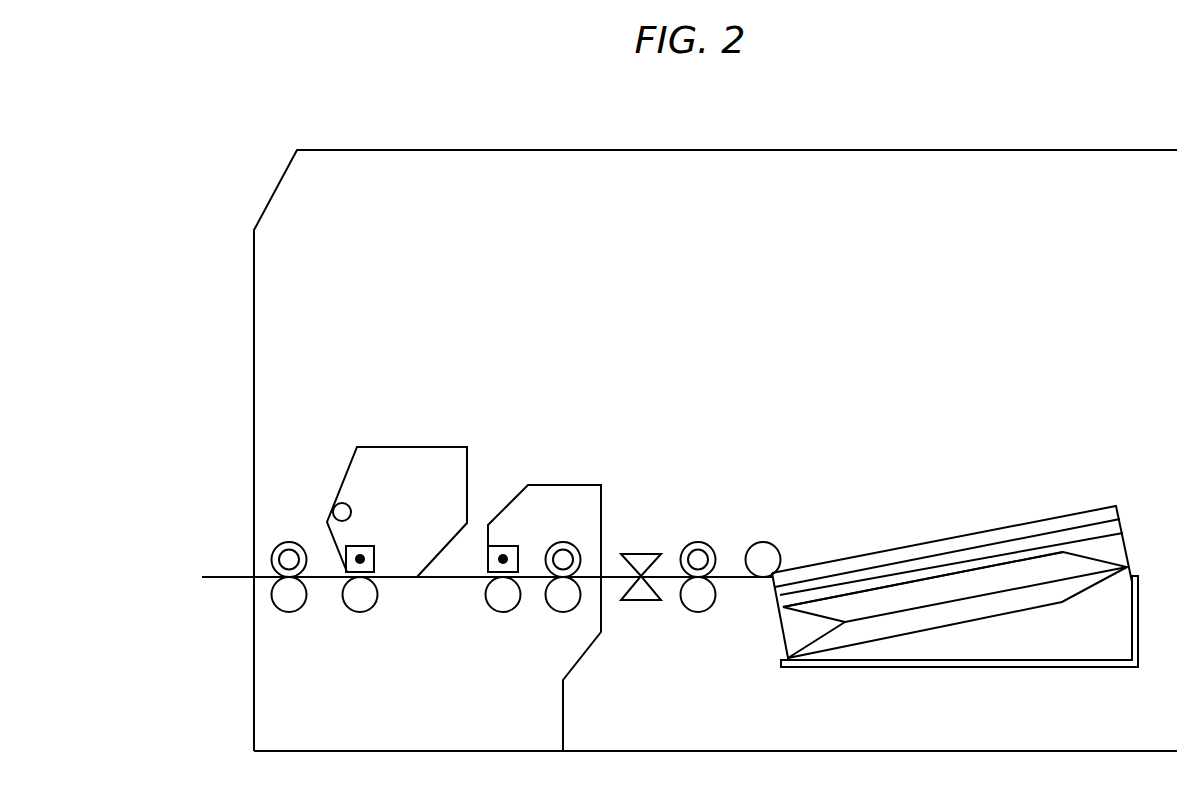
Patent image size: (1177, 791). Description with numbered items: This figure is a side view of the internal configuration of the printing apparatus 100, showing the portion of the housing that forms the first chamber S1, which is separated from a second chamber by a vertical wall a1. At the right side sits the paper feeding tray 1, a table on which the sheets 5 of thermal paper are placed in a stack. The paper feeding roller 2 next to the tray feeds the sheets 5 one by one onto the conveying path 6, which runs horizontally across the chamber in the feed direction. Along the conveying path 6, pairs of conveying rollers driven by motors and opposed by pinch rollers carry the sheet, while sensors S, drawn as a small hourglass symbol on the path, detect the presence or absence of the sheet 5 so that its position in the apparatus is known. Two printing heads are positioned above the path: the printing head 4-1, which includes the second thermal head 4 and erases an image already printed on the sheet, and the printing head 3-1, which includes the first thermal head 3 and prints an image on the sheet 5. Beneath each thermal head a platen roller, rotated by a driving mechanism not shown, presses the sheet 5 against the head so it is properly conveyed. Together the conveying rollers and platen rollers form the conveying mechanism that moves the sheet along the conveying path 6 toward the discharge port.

The printing apparatus 100 is at (776, 149).
The vertical wall a1 is at (993, 208).
The first chamber S1 is at (1021, 306).
The conveying path 6 is at (268, 576).
The printing head 3-1 is at (410, 447).
The first thermal head 3 is at (365, 547).
The printing head 4-1 is at (580, 485).
The second thermal head 4 is at (508, 546).
The sensors S is at (645, 553).
The paper feeding roller 2 is at (766, 546).
The sheets 5 is at (1030, 522).
The paper feeding tray 1 is at (1128, 556).